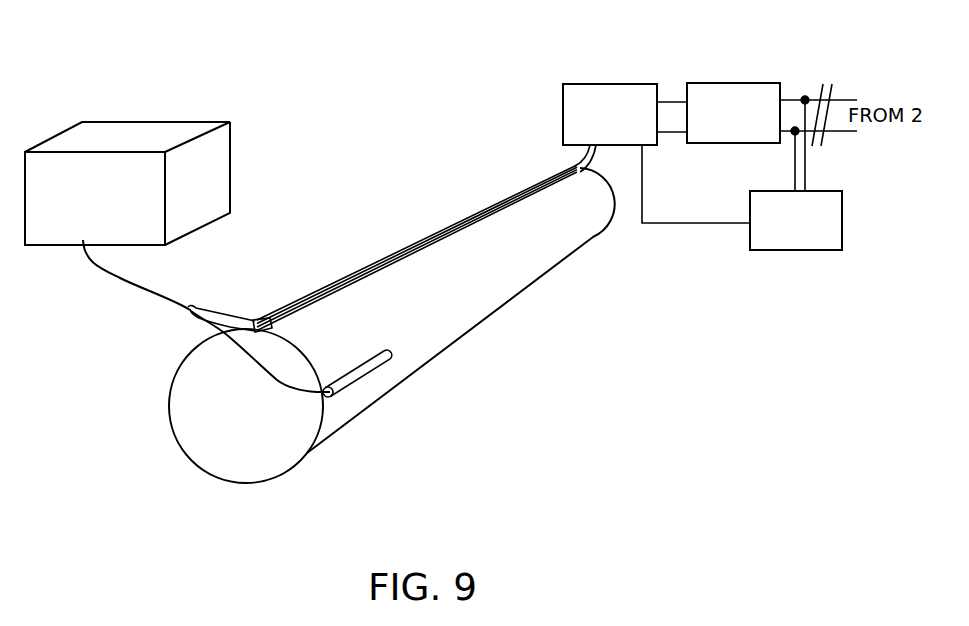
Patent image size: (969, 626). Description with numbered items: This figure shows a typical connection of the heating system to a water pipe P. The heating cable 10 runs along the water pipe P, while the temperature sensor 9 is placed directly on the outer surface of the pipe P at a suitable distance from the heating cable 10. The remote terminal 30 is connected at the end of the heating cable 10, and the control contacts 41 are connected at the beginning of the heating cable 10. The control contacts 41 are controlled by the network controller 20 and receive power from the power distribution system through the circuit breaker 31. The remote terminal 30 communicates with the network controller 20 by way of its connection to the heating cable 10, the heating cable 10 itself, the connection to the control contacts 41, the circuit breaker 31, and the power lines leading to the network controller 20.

The remote terminal 30 is at (137, 165).
The control contacts 41 is at (546, 114).
The circuit breaker 31 is at (733, 83).
The network controller 20 is at (797, 251).
The heating cable 10 is at (312, 291).
The temperature sensor 9 is at (368, 364).
The water pipe P is at (455, 341).